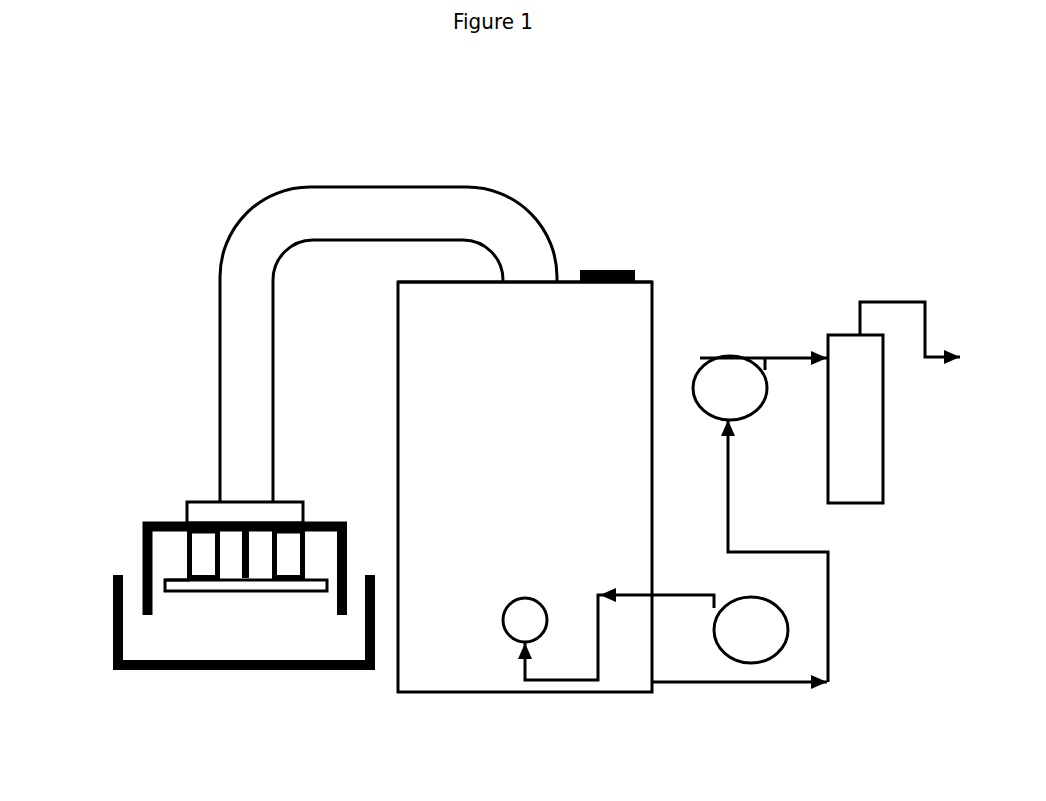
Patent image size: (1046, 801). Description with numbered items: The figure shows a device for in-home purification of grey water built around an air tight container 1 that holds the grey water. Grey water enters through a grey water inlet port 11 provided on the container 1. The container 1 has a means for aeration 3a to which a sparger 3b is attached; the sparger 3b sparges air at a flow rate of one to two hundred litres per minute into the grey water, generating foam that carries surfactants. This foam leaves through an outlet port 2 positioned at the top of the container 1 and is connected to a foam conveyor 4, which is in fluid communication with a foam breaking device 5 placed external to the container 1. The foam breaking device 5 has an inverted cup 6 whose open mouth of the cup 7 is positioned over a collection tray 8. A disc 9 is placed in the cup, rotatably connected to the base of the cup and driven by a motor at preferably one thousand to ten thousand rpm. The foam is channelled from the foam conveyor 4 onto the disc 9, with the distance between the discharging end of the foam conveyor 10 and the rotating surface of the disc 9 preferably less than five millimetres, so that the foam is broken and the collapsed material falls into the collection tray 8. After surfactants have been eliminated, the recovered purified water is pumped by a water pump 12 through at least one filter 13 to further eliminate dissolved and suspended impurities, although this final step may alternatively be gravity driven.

The air tight container 1 is at (525, 487).
The outlet port 2 is at (525, 307).
The means for aeration 3a is at (751, 630).
The sparger 3b is at (579, 634).
The foam conveyor 4 is at (388, 344).
The foam breaking device 5 is at (323, 513).
The inverted cup 6 is at (133, 547).
The open mouth of the cup 7 is at (333, 620).
The collection tray 8 is at (102, 607).
The disc 9 is at (173, 574).
The discharging end of the foam conveyor 10 is at (213, 583).
The grey water inlet port 11 is at (607, 252).
The water pump 12 is at (740, 520).
The filter 13 is at (894, 402).